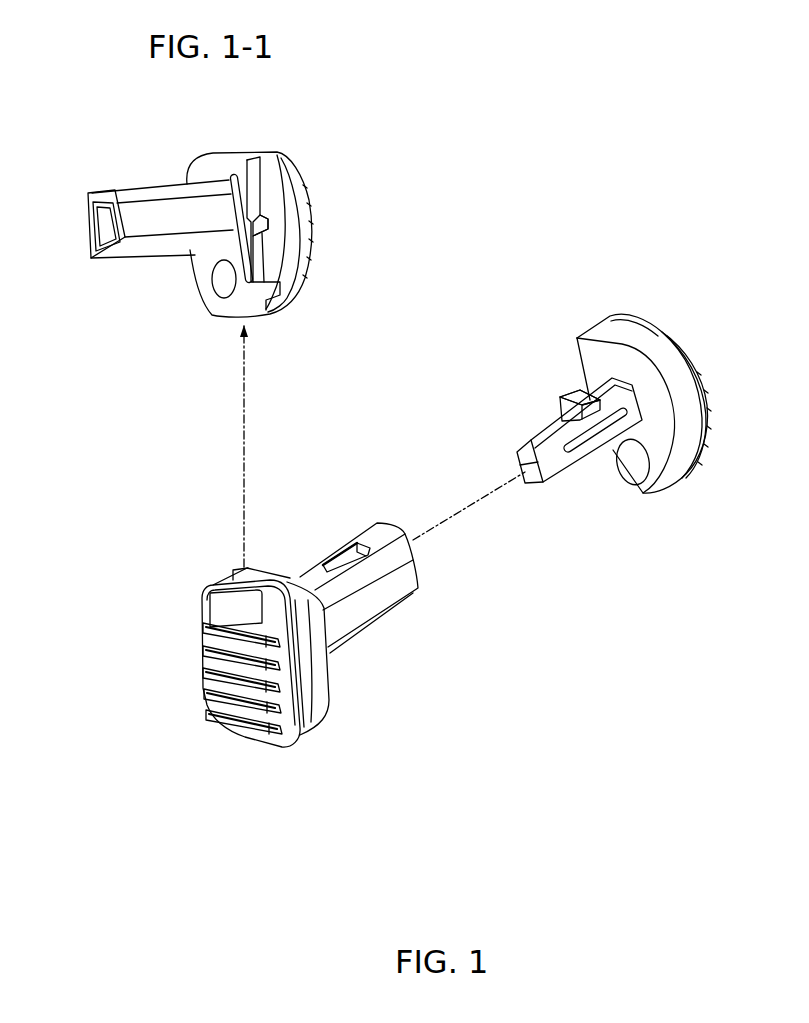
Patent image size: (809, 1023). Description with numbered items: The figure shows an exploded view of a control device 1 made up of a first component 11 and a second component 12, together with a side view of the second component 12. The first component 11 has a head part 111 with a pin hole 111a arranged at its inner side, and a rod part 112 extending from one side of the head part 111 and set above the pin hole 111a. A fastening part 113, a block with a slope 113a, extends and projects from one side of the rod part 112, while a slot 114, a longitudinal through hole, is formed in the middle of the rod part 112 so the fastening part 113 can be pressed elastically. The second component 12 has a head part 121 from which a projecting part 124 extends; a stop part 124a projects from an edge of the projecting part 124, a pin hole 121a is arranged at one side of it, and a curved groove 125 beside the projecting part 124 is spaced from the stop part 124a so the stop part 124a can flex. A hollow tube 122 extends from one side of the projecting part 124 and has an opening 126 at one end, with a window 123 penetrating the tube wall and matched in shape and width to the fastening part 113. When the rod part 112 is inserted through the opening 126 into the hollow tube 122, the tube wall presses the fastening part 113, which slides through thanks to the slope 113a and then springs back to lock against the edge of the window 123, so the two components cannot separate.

In FIG. 1, the control device 1 is at (456, 812).
In FIG. 1, the first component 11 is at (608, 437).
In FIG. 1, the head part 111 is at (658, 333).
In FIG. 1, the pin hole 111a is at (638, 468).
In FIG. 1, the rod part 112 is at (542, 432).
In FIG. 1, the fastening part 113 is at (583, 395).
In FIG. 1, the slope 113a is at (572, 407).
In FIG. 1, the slot 114 is at (585, 446).
In FIG. 1-1, the second component 12 is at (239, 243).
In FIG. 1, the second component 12 is at (306, 633).
In FIG. 1-1, the head part 121 is at (310, 264).
In FIG. 1, the head part 121 is at (230, 703).
In FIG. 1-1, the pin hole 121a is at (225, 283).
In FIG. 1, the hollow tube 122 is at (397, 587).
In FIG. 1, the window 123 is at (351, 543).
In FIG. 1-1, the projecting part 124 is at (277, 308).
In FIG. 1-1, the stop part 124a is at (258, 218).
In FIG. 1-1, the groove 125 is at (240, 255).
In FIG. 1-1, the opening 126 is at (101, 214).